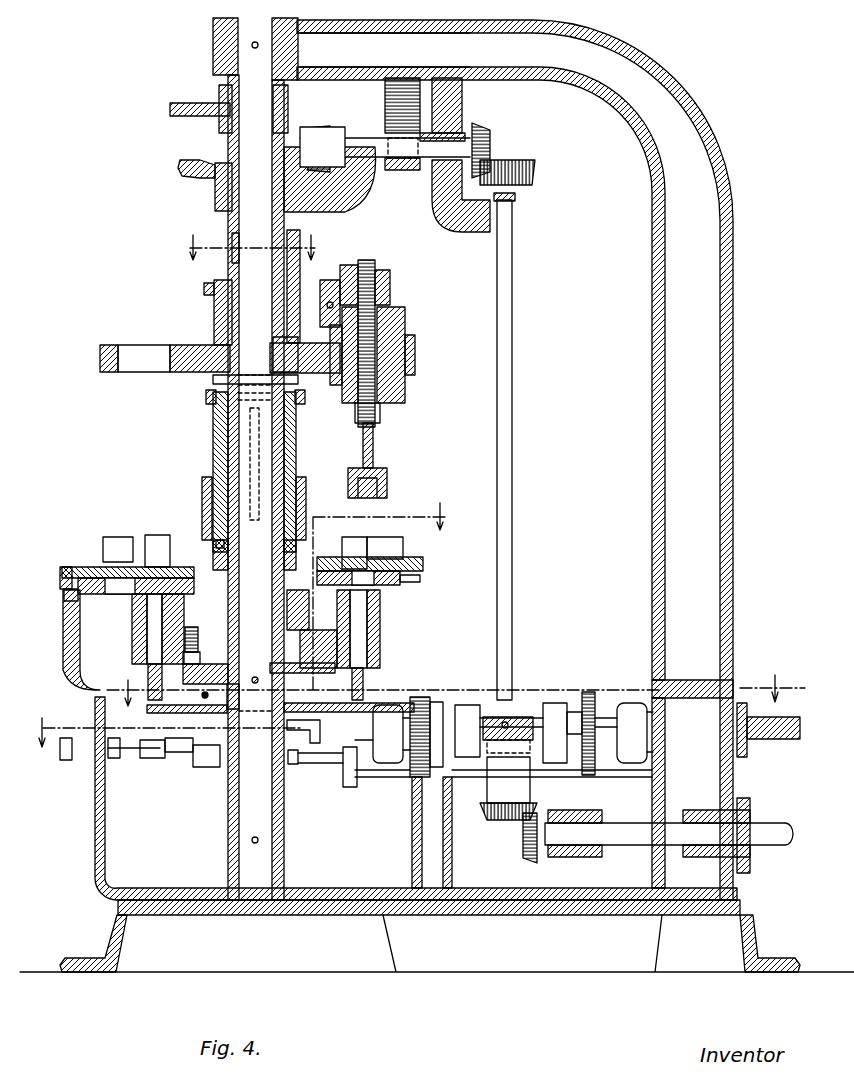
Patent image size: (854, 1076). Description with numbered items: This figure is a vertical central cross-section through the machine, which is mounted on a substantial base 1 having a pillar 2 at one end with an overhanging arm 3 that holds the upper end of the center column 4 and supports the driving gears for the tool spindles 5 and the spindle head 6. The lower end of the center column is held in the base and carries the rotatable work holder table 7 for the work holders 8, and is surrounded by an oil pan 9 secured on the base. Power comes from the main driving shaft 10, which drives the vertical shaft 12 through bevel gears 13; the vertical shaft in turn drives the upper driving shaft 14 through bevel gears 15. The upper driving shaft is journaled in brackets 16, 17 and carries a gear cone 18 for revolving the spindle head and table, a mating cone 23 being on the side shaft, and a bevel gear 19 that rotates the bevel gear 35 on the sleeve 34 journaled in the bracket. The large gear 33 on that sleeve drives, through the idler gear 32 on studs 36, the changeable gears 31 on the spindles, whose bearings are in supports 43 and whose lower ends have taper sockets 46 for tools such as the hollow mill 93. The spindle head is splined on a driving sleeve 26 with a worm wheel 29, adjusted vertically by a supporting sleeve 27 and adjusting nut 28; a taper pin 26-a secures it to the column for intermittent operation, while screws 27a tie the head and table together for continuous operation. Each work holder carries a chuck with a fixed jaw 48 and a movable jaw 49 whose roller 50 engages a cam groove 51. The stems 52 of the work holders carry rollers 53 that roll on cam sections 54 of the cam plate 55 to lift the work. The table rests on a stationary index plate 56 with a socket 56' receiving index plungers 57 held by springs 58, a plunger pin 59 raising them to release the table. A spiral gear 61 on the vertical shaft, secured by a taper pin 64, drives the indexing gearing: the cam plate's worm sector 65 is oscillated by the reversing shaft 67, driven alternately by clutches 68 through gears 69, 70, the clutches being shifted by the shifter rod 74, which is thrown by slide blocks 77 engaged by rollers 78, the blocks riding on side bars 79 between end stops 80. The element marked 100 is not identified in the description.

The base 1 is at (437, 936).
The pillar 2 is at (515, 460).
The overhanging arm 3 is at (385, 50).
The center column 4 is at (255, 459).
The tool spindles 5 is at (373, 445).
The spindle head 6 is at (78, 360).
The work holder table 7 is at (380, 645).
The work holders 8 is at (410, 603).
The oil pan 9 is at (95, 830).
The main driving shaft 10 is at (630, 838).
The vertical shaft 12 is at (512, 360).
The bevel gears 13 is at (500, 820).
The upper driving shaft 14 is at (381, 418).
The bevel gears 15 is at (492, 135).
The bracket 16 is at (470, 232).
The bracket 17 is at (332, 212).
The gear cone 18 is at (395, 170).
The bevel gear 19 is at (305, 149).
The mating cone 23 is at (420, 90).
The driving sleeve 26 is at (219, 133).
The taper pin 26-a is at (213, 380).
The supporting sleeve 27 is at (213, 422).
The screws 27a is at (213, 548).
The adjusting nut 28 is at (206, 398).
The worm wheel 29 is at (184, 87).
The changeable gears 31 is at (392, 288).
The idler gear 32 is at (367, 262).
The large gear 33 is at (204, 290).
The sleeve 34 is at (232, 253).
The bevel gear 35 is at (182, 176).
The studs 36 is at (330, 280).
The supports 43 is at (425, 385).
The taper sockets 46 is at (363, 448).
The fixed jaw 48 is at (330, 528).
The movable jaw 49 is at (398, 538).
The roller 50 is at (445, 578).
The cam groove 51 is at (64, 595).
The stems 52 is at (410, 615).
The rollers 53 is at (405, 660).
The cam sections 54 is at (75, 755).
The cam plate 55 is at (140, 748).
The index plate 56 is at (235, 698).
The socket 56' is at (228, 670).
The index plungers 57 is at (200, 658).
The springs 58 is at (198, 635).
The plunger pin 59 is at (160, 750).
The spiral gear 61 is at (560, 712).
The taper pin 64 is at (500, 717).
The worm sector 65 is at (178, 752).
The reversing shaft 67 is at (395, 720).
The clutches 68 is at (575, 660).
The gear 69 is at (600, 770).
The gear 70 is at (590, 692).
The shifter rod 74 is at (385, 783).
The slide blocks 77 is at (298, 800).
The rollers 78 is at (115, 758).
The side bars 79 is at (318, 743).
The end stops 80 is at (345, 800).
The hollow mill 93 is at (387, 475).
The plate 100 is at (202, 485).